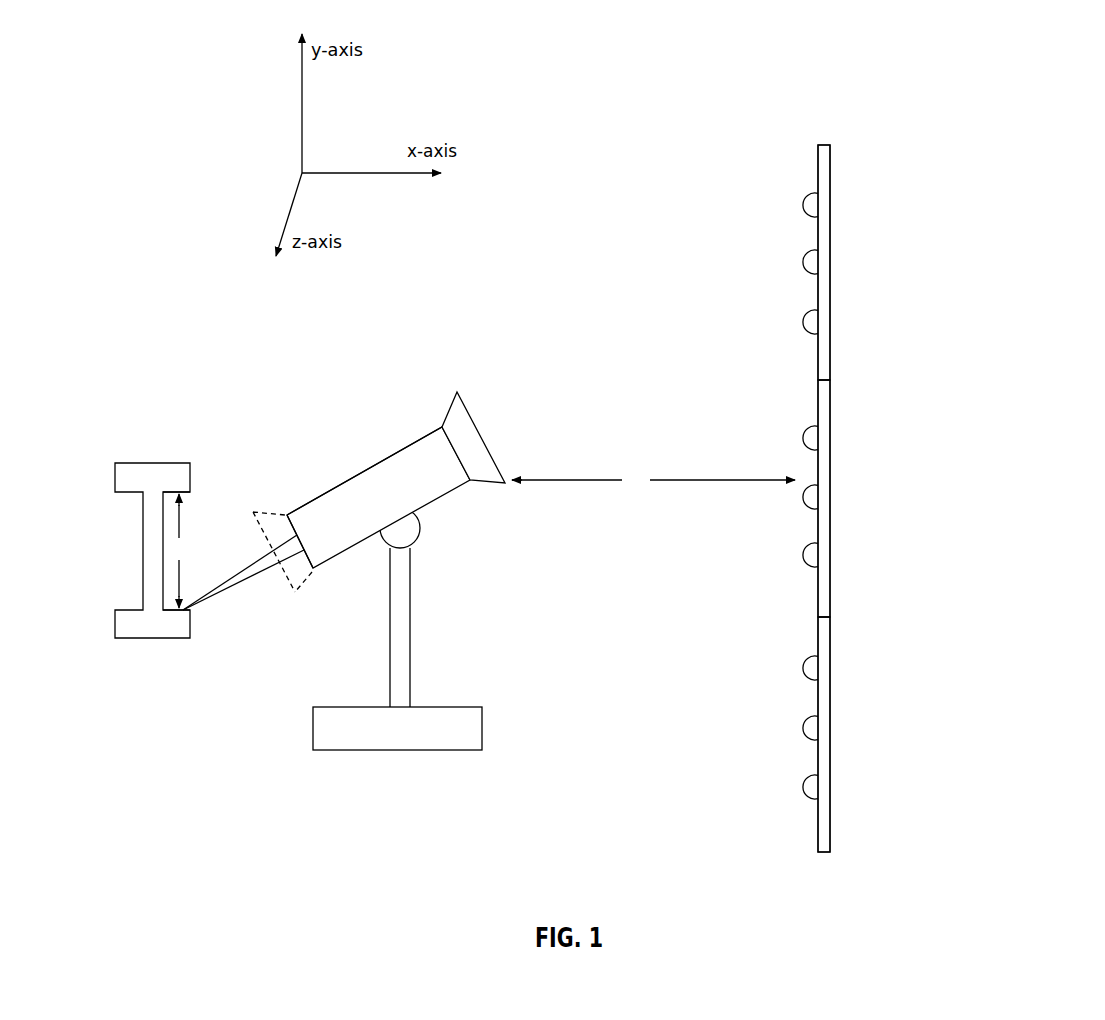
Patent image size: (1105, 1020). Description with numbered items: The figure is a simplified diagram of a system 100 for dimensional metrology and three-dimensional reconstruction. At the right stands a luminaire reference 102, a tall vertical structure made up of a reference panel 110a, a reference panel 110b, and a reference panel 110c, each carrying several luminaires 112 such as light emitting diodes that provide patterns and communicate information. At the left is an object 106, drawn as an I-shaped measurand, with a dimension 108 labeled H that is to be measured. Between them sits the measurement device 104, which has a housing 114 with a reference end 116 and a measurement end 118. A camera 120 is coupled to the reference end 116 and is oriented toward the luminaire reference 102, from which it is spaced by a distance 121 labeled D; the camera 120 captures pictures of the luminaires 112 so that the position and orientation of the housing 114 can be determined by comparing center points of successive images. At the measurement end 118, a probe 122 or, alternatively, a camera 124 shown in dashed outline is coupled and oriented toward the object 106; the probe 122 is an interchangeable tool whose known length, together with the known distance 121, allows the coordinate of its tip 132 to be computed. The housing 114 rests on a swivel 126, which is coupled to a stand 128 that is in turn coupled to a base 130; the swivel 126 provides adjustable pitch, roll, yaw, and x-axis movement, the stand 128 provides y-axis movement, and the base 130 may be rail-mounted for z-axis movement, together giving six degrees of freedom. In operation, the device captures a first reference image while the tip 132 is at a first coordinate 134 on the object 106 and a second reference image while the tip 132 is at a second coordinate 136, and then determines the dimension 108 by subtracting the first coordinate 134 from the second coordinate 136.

The system 100 is at (1012, 76).
The luminaire reference 102 is at (882, 217).
The measurement device 104 is at (382, 345).
The object 106 is at (135, 410).
The dimension 108 is at (181, 535).
The reference panel 110a is at (825, 290).
The reference panel 110b is at (825, 468).
The reference panel 110c is at (825, 700).
The luminaires 112 is at (803, 207).
The housing 114 is at (356, 474).
The reference end 116 is at (421, 436).
The measurement end 118 is at (297, 509).
The camera 120 is at (458, 392).
The distance 121 is at (705, 478).
The probe 122 is at (243, 587).
The camera 124 is at (295, 592).
The swivel 126 is at (420, 532).
The stand 128 is at (412, 628).
The base 130 is at (452, 752).
The tip 132 is at (183, 614).
The first coordinate 134 is at (198, 616).
The second coordinate 136 is at (198, 489).